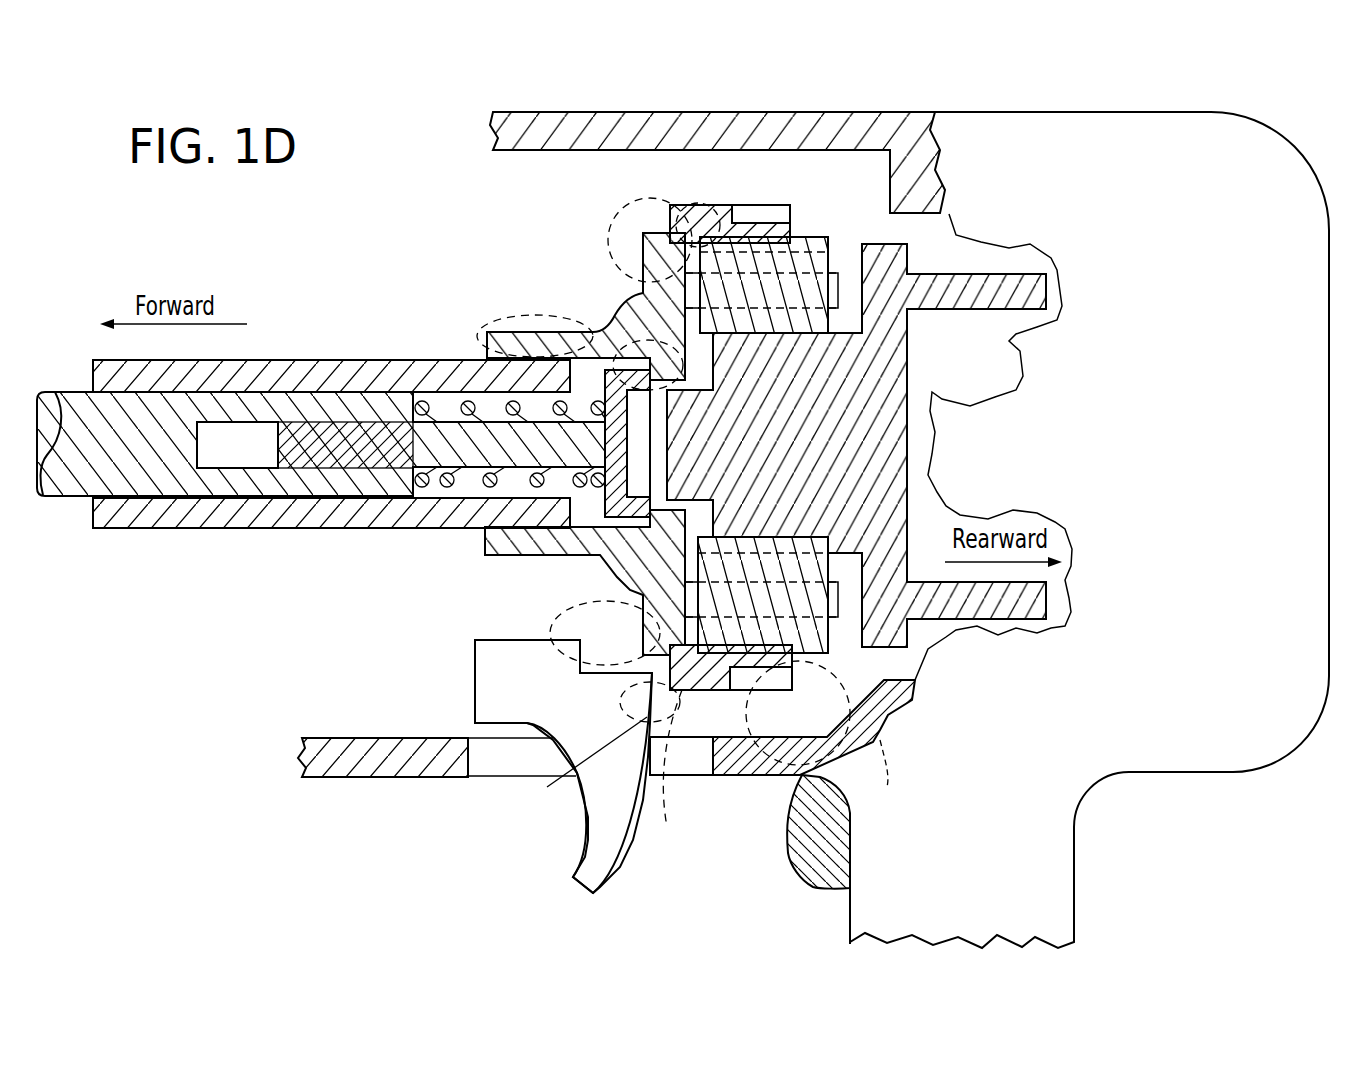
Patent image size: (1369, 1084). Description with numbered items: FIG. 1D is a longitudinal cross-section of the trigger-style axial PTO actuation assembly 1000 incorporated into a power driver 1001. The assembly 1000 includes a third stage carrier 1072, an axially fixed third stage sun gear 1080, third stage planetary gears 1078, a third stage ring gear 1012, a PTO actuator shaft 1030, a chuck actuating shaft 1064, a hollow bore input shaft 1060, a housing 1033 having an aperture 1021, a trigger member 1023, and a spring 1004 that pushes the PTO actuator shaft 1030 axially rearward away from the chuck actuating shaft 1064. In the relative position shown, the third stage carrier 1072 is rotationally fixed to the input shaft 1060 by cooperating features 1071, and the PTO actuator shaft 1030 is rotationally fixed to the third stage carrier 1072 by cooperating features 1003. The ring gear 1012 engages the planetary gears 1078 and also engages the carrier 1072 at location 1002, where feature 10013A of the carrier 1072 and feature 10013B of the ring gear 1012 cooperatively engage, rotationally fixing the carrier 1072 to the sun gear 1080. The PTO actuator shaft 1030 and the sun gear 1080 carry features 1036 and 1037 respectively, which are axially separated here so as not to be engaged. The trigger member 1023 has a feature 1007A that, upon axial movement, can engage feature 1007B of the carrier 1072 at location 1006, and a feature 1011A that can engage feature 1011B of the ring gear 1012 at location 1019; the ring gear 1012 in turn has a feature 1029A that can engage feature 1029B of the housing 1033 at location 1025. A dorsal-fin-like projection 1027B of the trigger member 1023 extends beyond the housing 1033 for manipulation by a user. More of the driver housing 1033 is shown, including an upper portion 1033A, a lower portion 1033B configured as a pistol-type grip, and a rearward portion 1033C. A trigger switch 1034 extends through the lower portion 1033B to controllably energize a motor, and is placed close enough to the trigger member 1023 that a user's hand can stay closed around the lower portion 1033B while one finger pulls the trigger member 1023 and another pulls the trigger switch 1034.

The trigger-style PTO actuation assembly 1000 is at (462, 247).
The power driver 1001 is at (238, 869).
The engagement of third stage ring gear to third stage carrier 1002 is at (672, 178).
The cooperating features 1003 is at (600, 318).
The spring 1004 is at (410, 393).
The engagement of feature 1007A with feature 1007B 1006 is at (565, 605).
The feature of trigger member 1007A is at (670, 665).
The feature of third stage carrier 1007B is at (620, 625).
The feature of trigger member 1011A is at (577, 767).
The feature of third stage ring gear 1011B is at (640, 675).
The third stage ring gear 1012 is at (694, 739).
The engagement of feature 1011A with feature 1011B 1019 is at (674, 773).
The aperture 1021 is at (470, 757).
The trigger member 1023 is at (420, 708).
The engagement of feature 1029A with feature 1029B 1025 is at (867, 740).
The dorsal-fin-like projection 1027B is at (602, 853).
The feature of third stage ring gear 1029A is at (790, 695).
The feature of housing 1029B is at (835, 680).
The PTO actuator shaft 1030 is at (400, 450).
The housing 1033 is at (367, 763).
The upper portion of housing 1033A is at (718, 112).
The lower portion of housing 1033B is at (878, 912).
The rearward portion of housing 1033C is at (1329, 693).
The trigger switch 1034 is at (812, 853).
The feature of PTO actuator shaft 1036 is at (627, 430).
The feature of third stage sun gear 1037 is at (657, 468).
The hollow bore input shaft 1060 is at (237, 530).
The chuck actuating shaft 1064 is at (72, 512).
The cooperating features 1071 is at (490, 315).
The third stage carrier 1072 is at (640, 310).
The third stage planetary gears 1078 is at (828, 320).
The third stage sun gear 1080 is at (907, 371).
The feature of third stage carrier 10013A is at (667, 223).
The feature of third stage ring gear 10013B is at (688, 245).